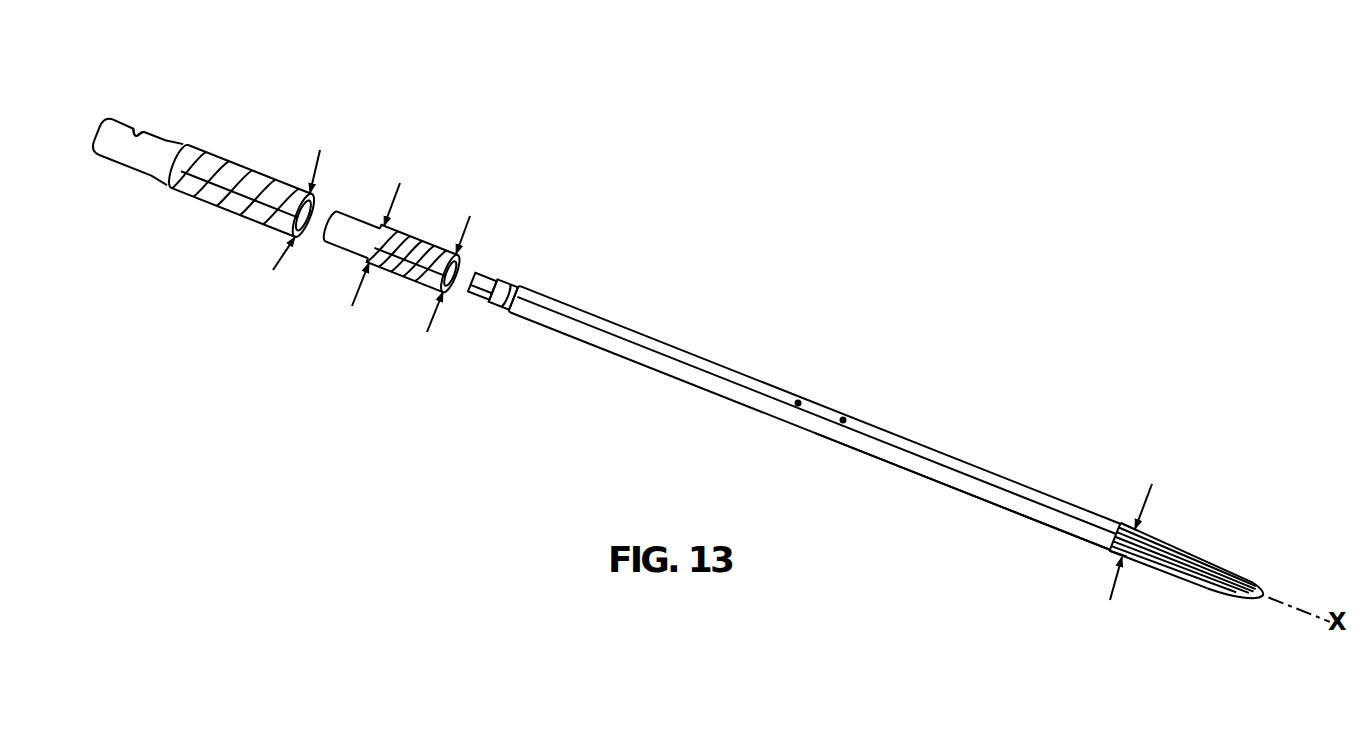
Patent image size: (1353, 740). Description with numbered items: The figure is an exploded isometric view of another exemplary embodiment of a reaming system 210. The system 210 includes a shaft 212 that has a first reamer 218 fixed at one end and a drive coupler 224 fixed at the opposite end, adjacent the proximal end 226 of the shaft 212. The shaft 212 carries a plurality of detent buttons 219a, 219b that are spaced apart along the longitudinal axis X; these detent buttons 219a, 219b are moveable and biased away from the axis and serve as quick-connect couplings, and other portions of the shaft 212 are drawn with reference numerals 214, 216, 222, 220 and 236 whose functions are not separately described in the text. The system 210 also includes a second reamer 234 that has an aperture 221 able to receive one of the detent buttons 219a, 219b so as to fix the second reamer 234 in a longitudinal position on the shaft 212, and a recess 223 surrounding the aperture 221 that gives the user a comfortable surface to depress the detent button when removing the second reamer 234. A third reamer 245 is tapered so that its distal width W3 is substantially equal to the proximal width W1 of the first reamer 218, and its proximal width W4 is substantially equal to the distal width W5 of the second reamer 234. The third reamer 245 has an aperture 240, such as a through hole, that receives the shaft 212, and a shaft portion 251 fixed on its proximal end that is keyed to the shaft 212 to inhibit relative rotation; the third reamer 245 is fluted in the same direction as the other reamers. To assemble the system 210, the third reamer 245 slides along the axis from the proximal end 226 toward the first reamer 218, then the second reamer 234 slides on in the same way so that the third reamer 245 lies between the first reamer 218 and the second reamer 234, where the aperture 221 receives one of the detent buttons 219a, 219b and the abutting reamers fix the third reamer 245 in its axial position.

The reaming system 210 is at (632, 292).
The shaft 212 is at (747, 401).
The shaft lower portion 214 is at (892, 464).
The shaft upper portion 216 is at (918, 450).
The first reamer 218 is at (1180, 557).
The detent button 219a is at (798, 403).
The detent button 219b is at (843, 420).
The distal point 220 is at (1258, 588).
The aperture 221 is at (142, 137).
The tip shoulder 222 is at (1123, 524).
The recess 223 is at (138, 137).
The drive coupler 224 is at (502, 283).
The proximal end 226 is at (471, 285).
The second reamer 234 is at (240, 180).
The sleeve distal opening 236 is at (310, 224).
The aperture 240 is at (453, 278).
The third reamer 245 is at (405, 265).
The shaft portion 251 is at (340, 241).
The proximal width W1 is at (1141, 533).
The distal width W3 is at (459, 262).
The proximal width W4 is at (387, 233).
The distal width W5 is at (305, 201).